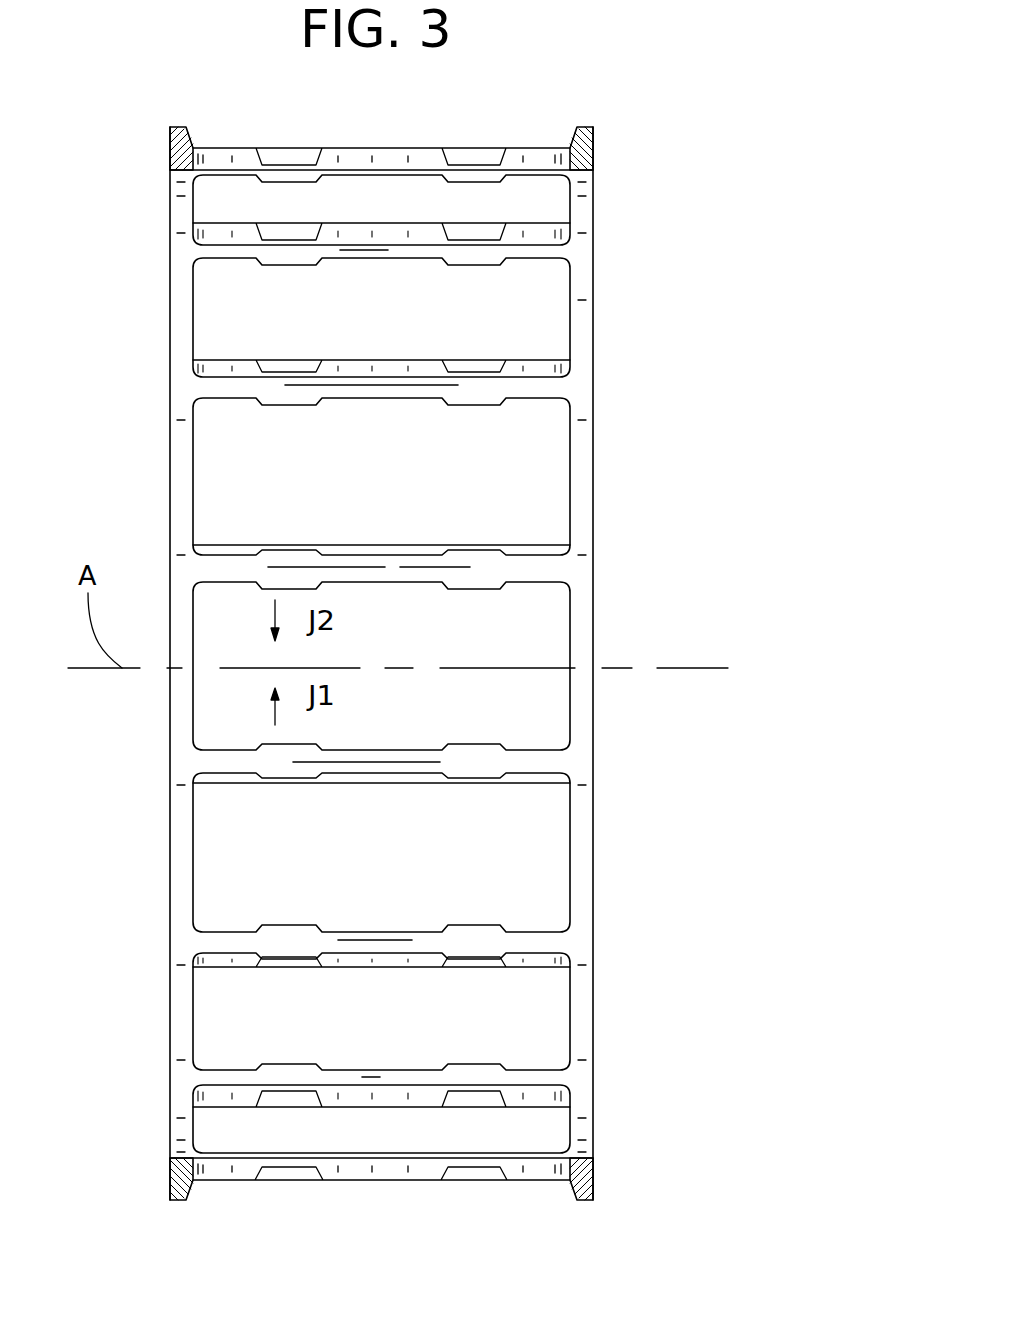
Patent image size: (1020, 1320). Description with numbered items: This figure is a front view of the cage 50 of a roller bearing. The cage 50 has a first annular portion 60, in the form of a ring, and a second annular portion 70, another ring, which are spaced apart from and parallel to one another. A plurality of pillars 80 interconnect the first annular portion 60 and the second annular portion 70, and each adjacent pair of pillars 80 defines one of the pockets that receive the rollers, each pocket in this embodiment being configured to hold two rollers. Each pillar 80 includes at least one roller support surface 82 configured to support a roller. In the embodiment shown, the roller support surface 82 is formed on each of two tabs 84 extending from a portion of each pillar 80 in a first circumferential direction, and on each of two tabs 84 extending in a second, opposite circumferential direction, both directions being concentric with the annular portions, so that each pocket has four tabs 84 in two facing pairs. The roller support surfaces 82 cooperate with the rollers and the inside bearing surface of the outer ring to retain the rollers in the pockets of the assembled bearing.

The cage 50 is at (628, 115).
The first annular portion 60 is at (180, 498).
The second annular portion 70 is at (585, 445).
The pillar 80 is at (377, 390).
The roller support surface 82 is at (470, 743).
The tab 84 is at (488, 755).